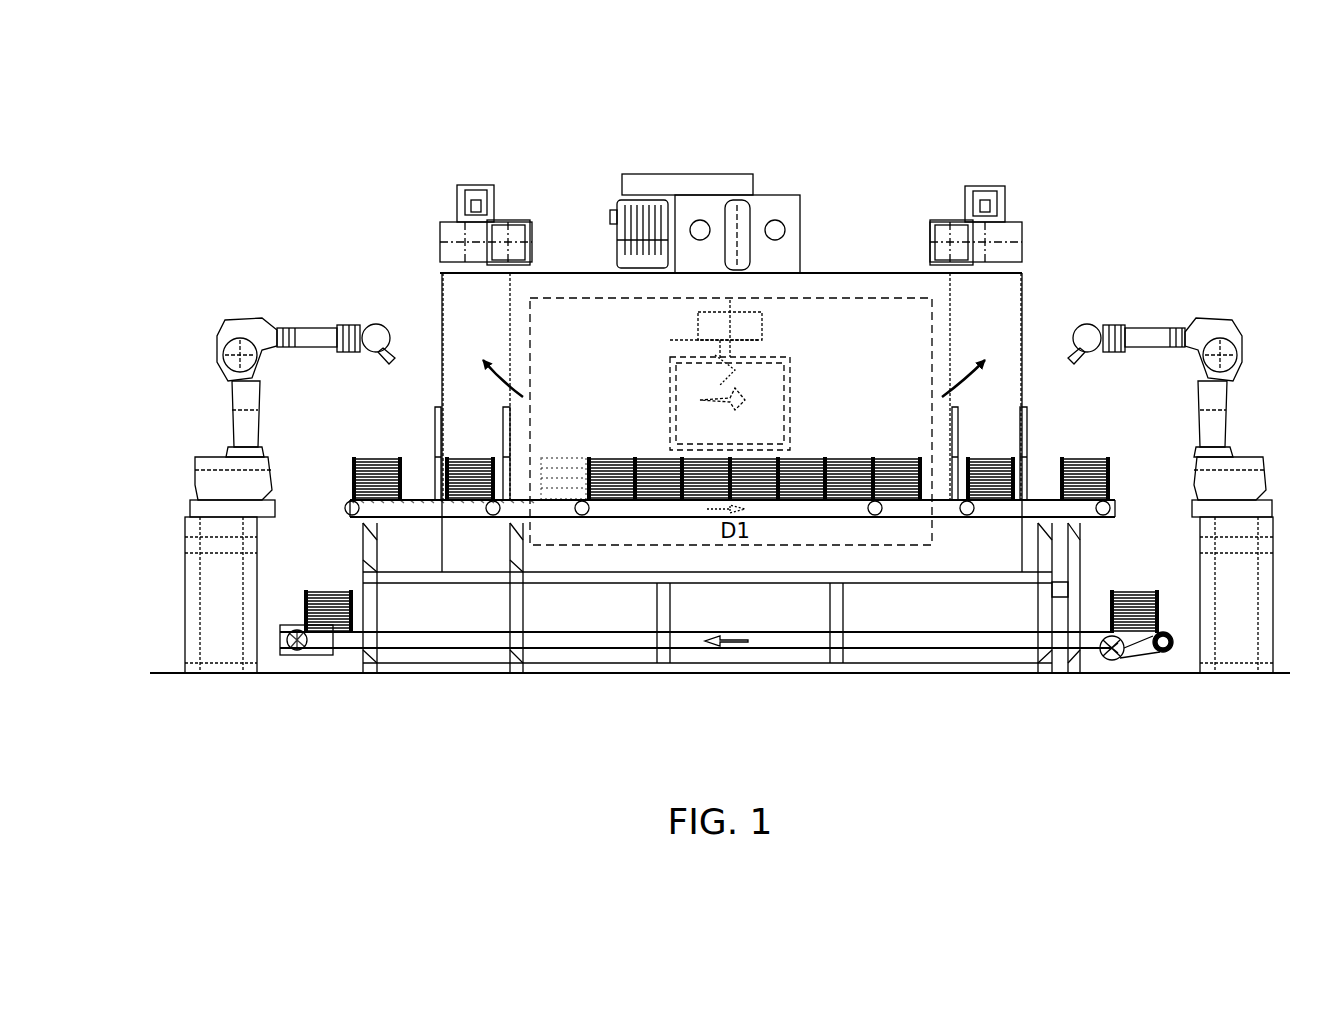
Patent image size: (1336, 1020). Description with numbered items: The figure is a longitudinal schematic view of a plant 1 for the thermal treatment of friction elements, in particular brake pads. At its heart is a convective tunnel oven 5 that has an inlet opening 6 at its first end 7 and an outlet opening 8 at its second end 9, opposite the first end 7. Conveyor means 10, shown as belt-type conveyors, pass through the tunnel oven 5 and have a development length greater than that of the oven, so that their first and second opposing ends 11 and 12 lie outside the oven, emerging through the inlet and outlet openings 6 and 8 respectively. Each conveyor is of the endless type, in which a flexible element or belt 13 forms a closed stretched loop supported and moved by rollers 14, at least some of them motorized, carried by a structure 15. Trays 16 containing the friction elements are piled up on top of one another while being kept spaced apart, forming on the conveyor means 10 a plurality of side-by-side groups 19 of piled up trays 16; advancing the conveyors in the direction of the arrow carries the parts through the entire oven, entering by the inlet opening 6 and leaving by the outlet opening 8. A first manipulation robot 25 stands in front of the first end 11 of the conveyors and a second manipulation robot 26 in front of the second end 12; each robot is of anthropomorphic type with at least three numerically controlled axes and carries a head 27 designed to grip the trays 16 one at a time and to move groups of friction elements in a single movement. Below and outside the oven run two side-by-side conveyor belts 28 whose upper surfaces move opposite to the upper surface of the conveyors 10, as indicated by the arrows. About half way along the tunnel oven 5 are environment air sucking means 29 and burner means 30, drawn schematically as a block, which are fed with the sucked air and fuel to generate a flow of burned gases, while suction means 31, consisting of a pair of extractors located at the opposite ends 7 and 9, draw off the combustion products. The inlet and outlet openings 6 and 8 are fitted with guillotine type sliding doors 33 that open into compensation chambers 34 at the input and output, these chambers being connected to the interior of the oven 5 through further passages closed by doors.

The plant 1 is at (1218, 116).
The convective tunnel oven 5 is at (822, 288).
The inlet opening 6 is at (428, 440).
The first end 7 is at (441, 290).
The outlet opening 8 is at (1040, 434).
The second end 9 is at (1024, 290).
The conveyor means 10 is at (460, 520).
The first end of the conveyors 11 is at (345, 522).
The second end of the conveyors 12 is at (1097, 522).
The flexible element (belt) 13 is at (424, 522).
The rollers 14 is at (350, 508).
The structure 15 is at (790, 575).
The trays 16 is at (392, 455).
The groups of piled up trays 19 is at (463, 446).
The first manipulation robot 25 is at (188, 456).
The second manipulation robot 26 is at (1278, 462).
The head 27 is at (390, 326).
The conveyor belts 28 is at (872, 642).
The environment air sucking means 29 is at (768, 186).
The burner means 30 is at (768, 345).
The suction means 31 is at (447, 192).
The guillotine type sliding doors 33 is at (430, 416).
The compensation chambers 34 is at (500, 290).